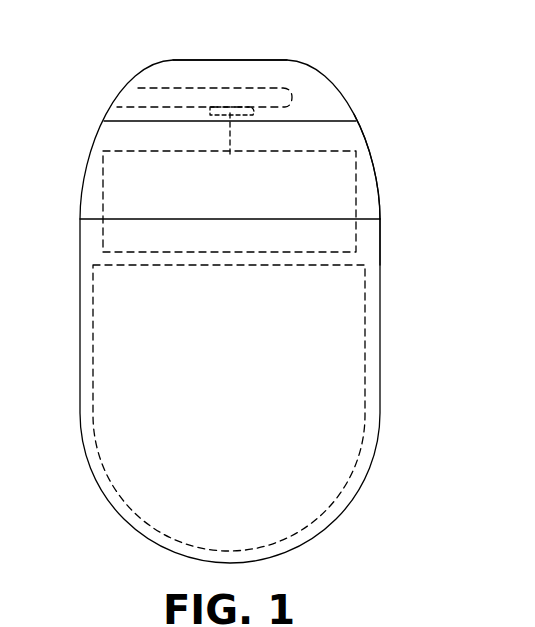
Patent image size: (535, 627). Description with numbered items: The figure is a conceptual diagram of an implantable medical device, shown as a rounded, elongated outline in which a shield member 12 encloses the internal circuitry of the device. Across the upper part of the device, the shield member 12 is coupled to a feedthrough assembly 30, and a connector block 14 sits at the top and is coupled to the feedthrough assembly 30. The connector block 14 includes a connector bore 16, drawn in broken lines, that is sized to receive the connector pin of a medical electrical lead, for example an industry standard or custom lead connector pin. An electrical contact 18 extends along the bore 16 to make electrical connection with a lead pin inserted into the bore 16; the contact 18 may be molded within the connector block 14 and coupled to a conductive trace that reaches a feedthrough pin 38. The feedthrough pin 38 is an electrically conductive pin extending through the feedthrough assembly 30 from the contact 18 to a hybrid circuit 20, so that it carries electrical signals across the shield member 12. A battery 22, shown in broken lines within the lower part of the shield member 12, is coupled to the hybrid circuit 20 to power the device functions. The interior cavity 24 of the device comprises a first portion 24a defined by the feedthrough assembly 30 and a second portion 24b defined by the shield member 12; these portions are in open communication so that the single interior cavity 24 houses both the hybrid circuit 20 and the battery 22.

The shield member 12 is at (381, 378).
The connector block 14 is at (233, 62).
The connector bore 16 is at (160, 87).
The electrical contact 18 is at (208, 113).
The feedthrough pin 38 is at (230, 140).
The feedthrough assembly 30 is at (372, 163).
The hybrid circuit 20 is at (102, 187).
The interior cavity 24 is at (93, 237).
The first portion 24a is at (367, 203).
The second portion 24b is at (357, 257).
The battery 22 is at (95, 365).